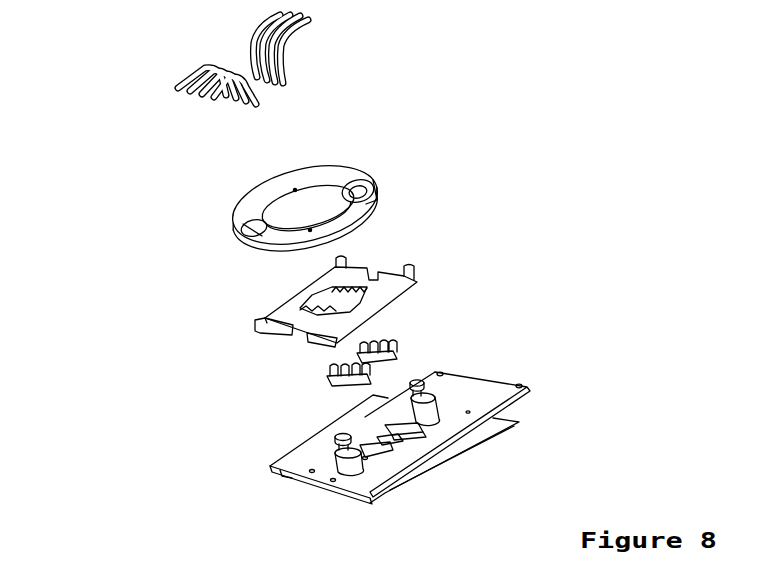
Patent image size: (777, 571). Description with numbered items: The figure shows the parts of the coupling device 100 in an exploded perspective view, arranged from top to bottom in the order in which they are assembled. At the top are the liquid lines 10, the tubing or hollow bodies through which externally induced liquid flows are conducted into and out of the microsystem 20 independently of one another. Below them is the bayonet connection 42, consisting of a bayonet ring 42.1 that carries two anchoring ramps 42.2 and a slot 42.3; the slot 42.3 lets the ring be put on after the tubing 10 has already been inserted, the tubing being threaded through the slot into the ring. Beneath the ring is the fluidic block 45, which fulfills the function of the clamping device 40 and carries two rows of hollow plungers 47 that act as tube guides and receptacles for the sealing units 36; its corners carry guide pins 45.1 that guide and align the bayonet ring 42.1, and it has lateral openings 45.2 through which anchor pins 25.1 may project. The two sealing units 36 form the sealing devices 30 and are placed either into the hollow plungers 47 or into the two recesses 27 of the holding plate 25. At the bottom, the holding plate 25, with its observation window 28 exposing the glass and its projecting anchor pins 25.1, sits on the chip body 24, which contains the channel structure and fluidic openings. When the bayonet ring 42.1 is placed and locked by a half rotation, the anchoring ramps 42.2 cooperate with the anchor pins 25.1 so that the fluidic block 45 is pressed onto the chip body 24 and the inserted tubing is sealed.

The coupling device 100 is at (146, 333).
The liquid lines 10 is at (167, 34).
The microsystem 20 is at (554, 391).
The chip body 24 is at (417, 477).
The holding plate 25 is at (297, 478).
The anchor pins 25.1 is at (352, 460).
The recesses 27 is at (423, 433).
The observation window 28 is at (387, 433).
The sealing devices 30 is at (302, 391).
The sealing units 36 is at (328, 371).
The clamping device 40 is at (221, 297).
The bayonet connection 42 is at (203, 215).
The bayonet ring 42.1 is at (372, 184).
The anchoring ramps 42.2 is at (363, 183).
The slot 42.3 is at (373, 203).
The fluidic block 45 is at (410, 296).
The guide pins 45.1 is at (407, 267).
The lateral openings 45.2 is at (380, 267).
The hollow plungers 47 is at (360, 293).